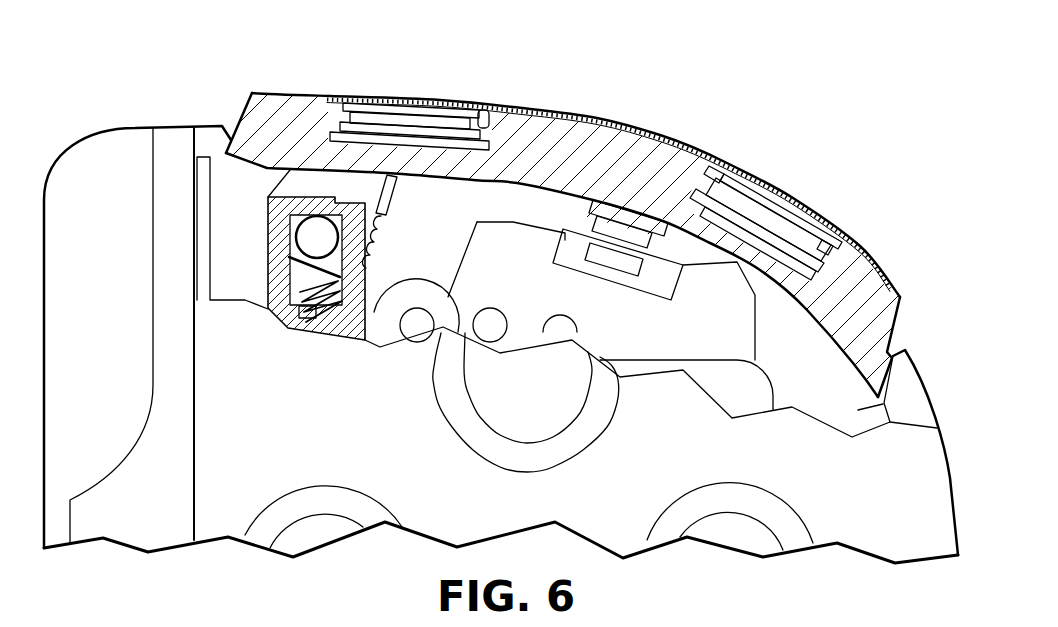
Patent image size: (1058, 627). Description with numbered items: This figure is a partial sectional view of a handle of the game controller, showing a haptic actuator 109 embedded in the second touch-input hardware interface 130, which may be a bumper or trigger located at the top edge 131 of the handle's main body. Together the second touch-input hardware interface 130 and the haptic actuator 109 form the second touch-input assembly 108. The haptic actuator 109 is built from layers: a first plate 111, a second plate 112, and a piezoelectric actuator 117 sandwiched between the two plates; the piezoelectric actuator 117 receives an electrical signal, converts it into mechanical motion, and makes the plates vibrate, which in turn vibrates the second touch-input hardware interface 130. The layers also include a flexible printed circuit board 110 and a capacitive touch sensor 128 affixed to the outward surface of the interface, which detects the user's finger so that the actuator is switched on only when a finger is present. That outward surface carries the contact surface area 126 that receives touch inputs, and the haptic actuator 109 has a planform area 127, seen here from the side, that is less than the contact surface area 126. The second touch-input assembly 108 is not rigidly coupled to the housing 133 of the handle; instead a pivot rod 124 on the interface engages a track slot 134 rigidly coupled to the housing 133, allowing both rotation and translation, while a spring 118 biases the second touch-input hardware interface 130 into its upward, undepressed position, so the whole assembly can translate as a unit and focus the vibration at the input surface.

The second touch-input assembly 108 is at (529, 214).
The haptic actuator 109 is at (586, 176).
The flexible printed circuit board 110 is at (496, 149).
The first plate 111 is at (372, 101).
The second plate 112 is at (438, 131).
The piezoelectric actuator 117 is at (651, 157).
The spring 118 is at (318, 284).
The pivot rod 124 is at (312, 237).
The contact surface area 126 is at (547, 107).
The planform area 127 is at (414, 103).
The capacitive touch sensor 128 is at (634, 130).
The second touch-input hardware interface 130 is at (302, 93).
The top edge 131 is at (160, 127).
The housing 133 is at (930, 392).
The track slot 134 is at (300, 281).